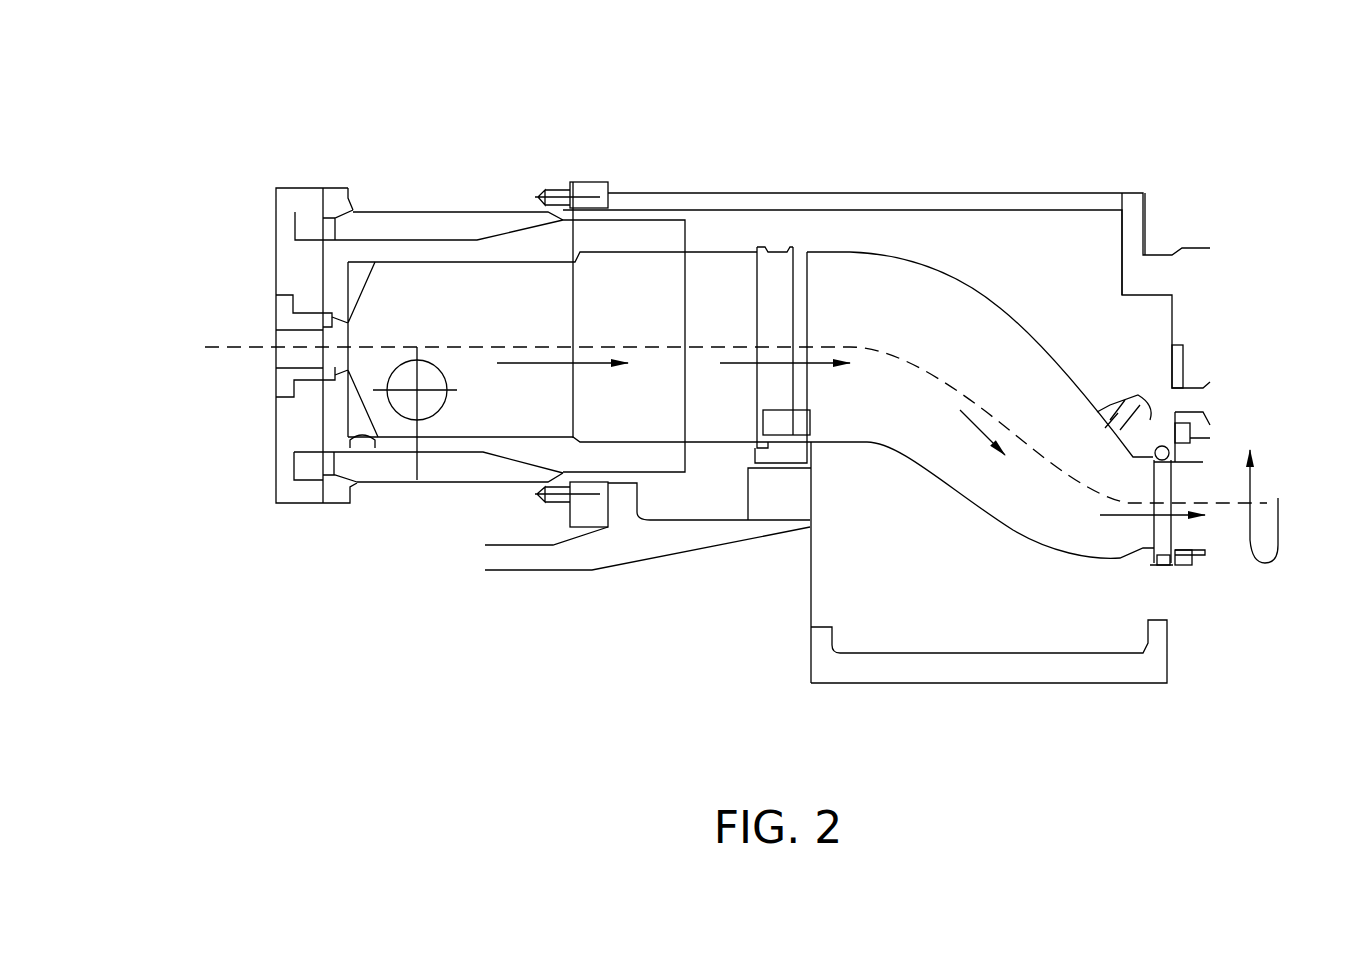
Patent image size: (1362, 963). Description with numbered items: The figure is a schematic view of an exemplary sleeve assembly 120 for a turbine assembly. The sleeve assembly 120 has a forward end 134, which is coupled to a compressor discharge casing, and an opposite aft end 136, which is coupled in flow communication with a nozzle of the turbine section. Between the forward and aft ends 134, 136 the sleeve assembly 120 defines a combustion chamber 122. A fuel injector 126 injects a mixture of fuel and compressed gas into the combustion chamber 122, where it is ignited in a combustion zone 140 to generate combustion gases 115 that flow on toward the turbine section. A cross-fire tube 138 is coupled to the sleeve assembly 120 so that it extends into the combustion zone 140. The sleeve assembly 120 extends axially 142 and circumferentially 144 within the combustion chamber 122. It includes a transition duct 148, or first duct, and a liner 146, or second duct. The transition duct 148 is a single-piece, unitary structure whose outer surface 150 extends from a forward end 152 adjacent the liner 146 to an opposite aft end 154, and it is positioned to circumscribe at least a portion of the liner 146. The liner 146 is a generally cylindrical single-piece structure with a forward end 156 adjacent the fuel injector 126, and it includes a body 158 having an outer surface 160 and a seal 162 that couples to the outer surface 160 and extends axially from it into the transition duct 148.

The combustion gases 115 is at (523, 365).
The sleeve assembly 120 is at (1222, 110).
The combustion chamber 122 is at (735, 287).
The fuel injector 126 is at (297, 353).
The forward end 134 is at (257, 272).
The aft end 136 is at (1213, 477).
The cross-fire tube 138 is at (396, 430).
The combustion zone 140 is at (405, 330).
The axial direction 142 is at (205, 347).
The circumferential direction 144 is at (1278, 543).
The liner 146 is at (710, 320).
The transition duct 148 is at (947, 447).
The outer surface 150 is at (930, 267).
The forward end 152 is at (795, 305).
The aft end 154 is at (1163, 525).
The forward end 156 is at (349, 320).
The body 158 is at (595, 303).
The outer surface 160 is at (620, 447).
The seal 162 is at (743, 363).